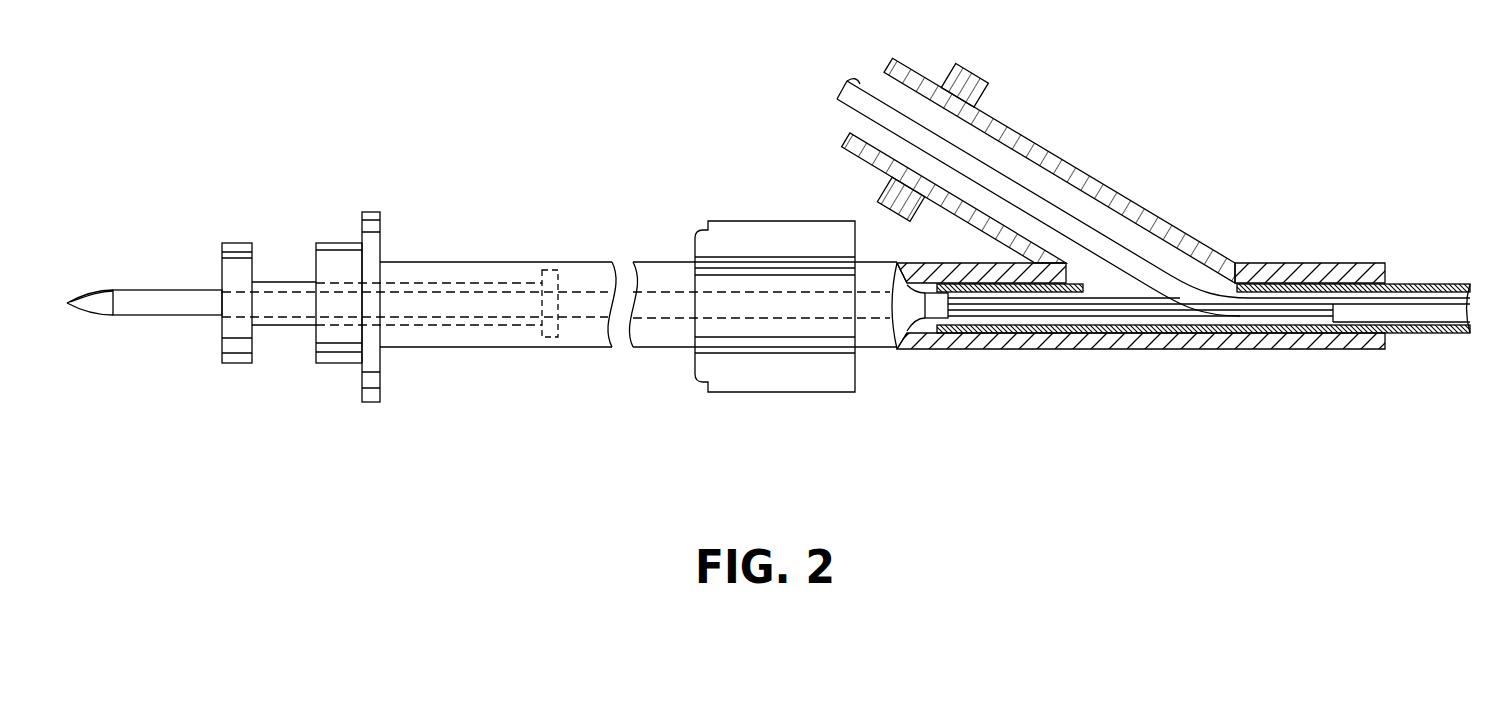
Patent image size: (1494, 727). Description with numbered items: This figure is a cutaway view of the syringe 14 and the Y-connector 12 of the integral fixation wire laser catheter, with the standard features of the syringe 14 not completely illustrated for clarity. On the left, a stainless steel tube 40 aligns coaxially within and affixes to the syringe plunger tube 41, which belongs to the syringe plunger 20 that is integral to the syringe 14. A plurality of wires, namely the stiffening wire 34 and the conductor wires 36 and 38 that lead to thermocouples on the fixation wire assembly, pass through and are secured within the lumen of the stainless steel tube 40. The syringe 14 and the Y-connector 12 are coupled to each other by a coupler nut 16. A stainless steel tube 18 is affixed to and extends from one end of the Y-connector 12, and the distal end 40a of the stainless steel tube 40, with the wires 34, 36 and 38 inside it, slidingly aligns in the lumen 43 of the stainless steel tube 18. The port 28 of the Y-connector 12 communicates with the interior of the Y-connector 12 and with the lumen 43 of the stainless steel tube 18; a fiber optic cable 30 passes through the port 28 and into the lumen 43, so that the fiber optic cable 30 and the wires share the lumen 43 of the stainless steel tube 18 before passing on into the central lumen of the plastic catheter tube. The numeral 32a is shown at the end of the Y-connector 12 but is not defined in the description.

The Y-connector 12 is at (1100, 190).
The syringe 14 is at (472, 228).
The coupler nut 16 is at (812, 372).
The stainless steel tube 18 is at (1405, 285).
The syringe plunger 20 is at (235, 243).
The port 28 is at (882, 90).
The fiber optic cable 30 is at (970, 165).
The housing end 32a is at (895, 268).
The stiffening wire 34 is at (67, 303).
The conductor wire 36 is at (93, 292).
The conductor wire 38 is at (93, 313).
The stainless steel tube 40 is at (175, 308).
The distal end 40a is at (928, 308).
The syringe plunger tube 41 is at (263, 283).
The lumen 43 is at (1010, 295).